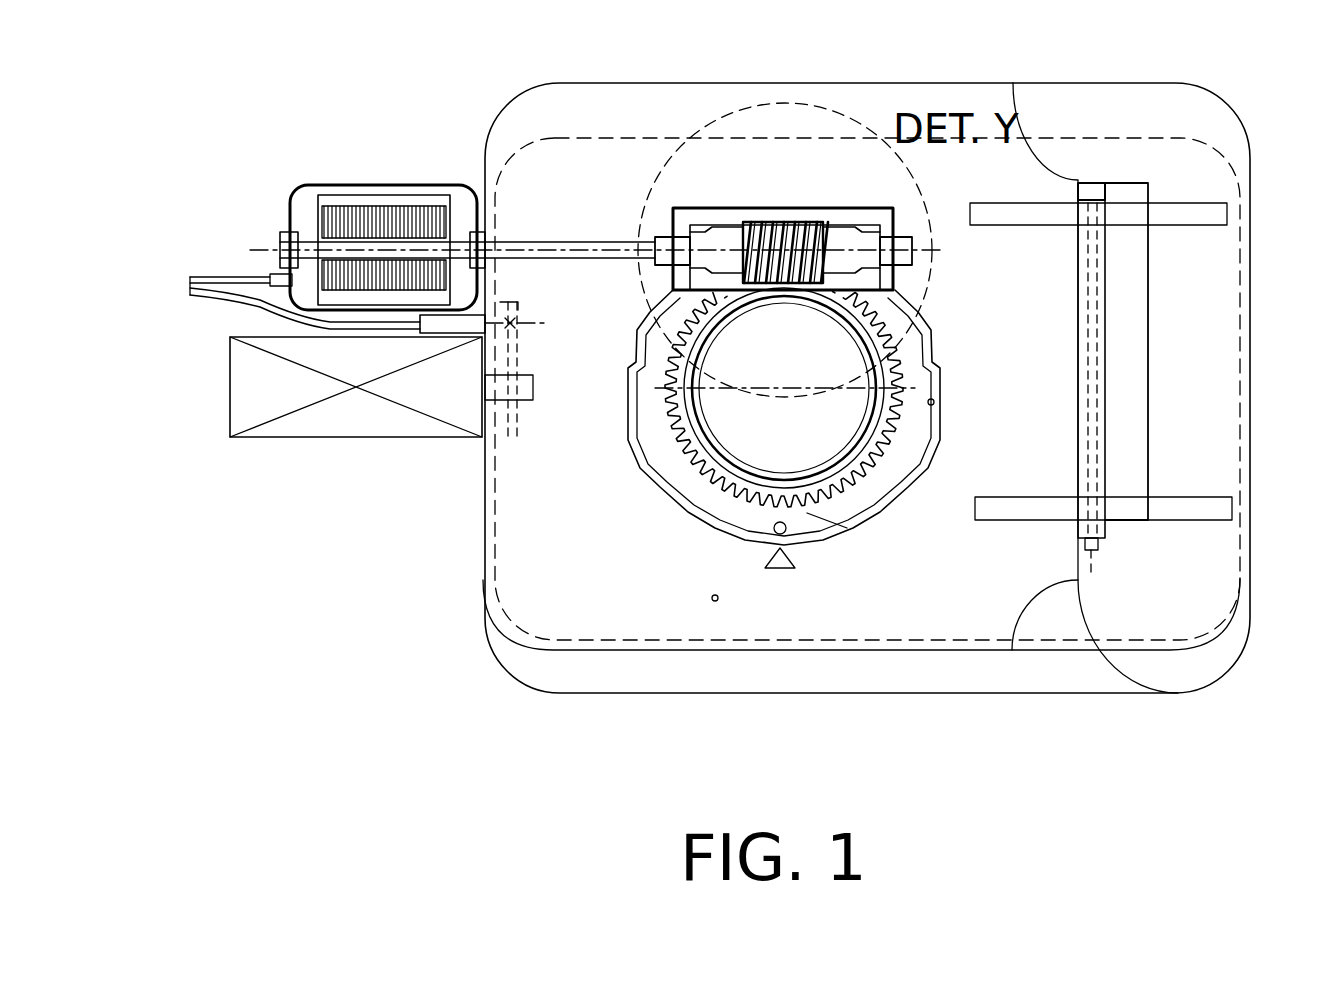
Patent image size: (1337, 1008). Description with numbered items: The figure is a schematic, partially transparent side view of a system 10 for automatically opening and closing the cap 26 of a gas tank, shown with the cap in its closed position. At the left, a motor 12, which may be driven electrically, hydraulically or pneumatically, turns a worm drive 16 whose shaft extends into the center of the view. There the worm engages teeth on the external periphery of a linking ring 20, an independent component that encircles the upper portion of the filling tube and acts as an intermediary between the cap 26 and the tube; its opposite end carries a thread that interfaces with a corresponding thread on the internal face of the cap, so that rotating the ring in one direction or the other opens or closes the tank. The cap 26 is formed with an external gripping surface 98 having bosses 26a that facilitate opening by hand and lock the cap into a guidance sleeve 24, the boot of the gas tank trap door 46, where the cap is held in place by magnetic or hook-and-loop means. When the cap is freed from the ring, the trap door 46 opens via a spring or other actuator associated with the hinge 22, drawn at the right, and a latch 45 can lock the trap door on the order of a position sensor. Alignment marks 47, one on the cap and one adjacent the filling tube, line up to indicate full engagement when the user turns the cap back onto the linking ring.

The system 10 is at (1159, 737).
The motor 12 is at (385, 187).
The worm drive 16 is at (755, 225).
The linking ring 20 is at (680, 432).
The hinge 22 is at (1148, 185).
The guidance sleeve 24 is at (934, 403).
The cap 26 is at (685, 478).
The bosses 26a is at (715, 530).
The latch 45 is at (500, 390).
The trap door 46 is at (713, 601).
The alignment marks 47 is at (778, 568).
The external gripping surface 98 is at (838, 531).